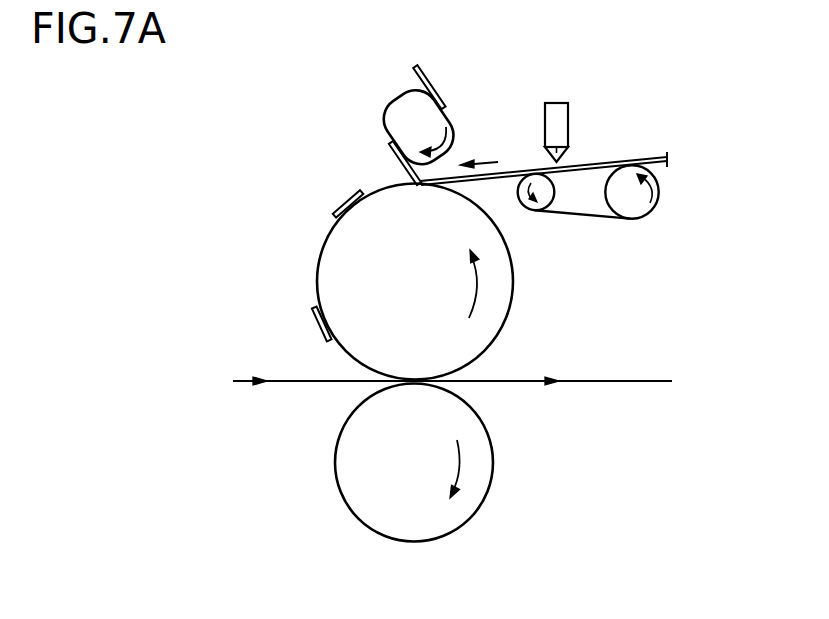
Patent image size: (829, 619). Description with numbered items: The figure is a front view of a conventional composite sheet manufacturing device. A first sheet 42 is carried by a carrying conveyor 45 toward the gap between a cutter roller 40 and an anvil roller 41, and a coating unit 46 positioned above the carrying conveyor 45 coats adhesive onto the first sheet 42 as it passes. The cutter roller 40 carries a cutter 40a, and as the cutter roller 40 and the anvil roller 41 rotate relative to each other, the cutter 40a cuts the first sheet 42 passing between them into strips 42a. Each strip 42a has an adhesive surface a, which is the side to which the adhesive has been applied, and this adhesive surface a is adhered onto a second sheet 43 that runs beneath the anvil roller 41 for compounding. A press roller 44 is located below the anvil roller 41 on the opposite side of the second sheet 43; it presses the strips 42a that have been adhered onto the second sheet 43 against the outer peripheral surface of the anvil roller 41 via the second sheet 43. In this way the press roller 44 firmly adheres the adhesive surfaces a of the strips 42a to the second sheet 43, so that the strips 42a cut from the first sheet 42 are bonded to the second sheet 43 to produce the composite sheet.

The cutter roller 40 is at (387, 95).
The cutter 40a is at (418, 69).
The anvil roller 41 is at (317, 278).
The first sheet 42 is at (508, 169).
The strips 42a is at (340, 209).
The second sheet 43 is at (287, 382).
The press roller 44 is at (364, 523).
The carrying conveyor 45 is at (645, 215).
The coating unit 46 is at (557, 103).
The adhesive surface a is at (530, 172).